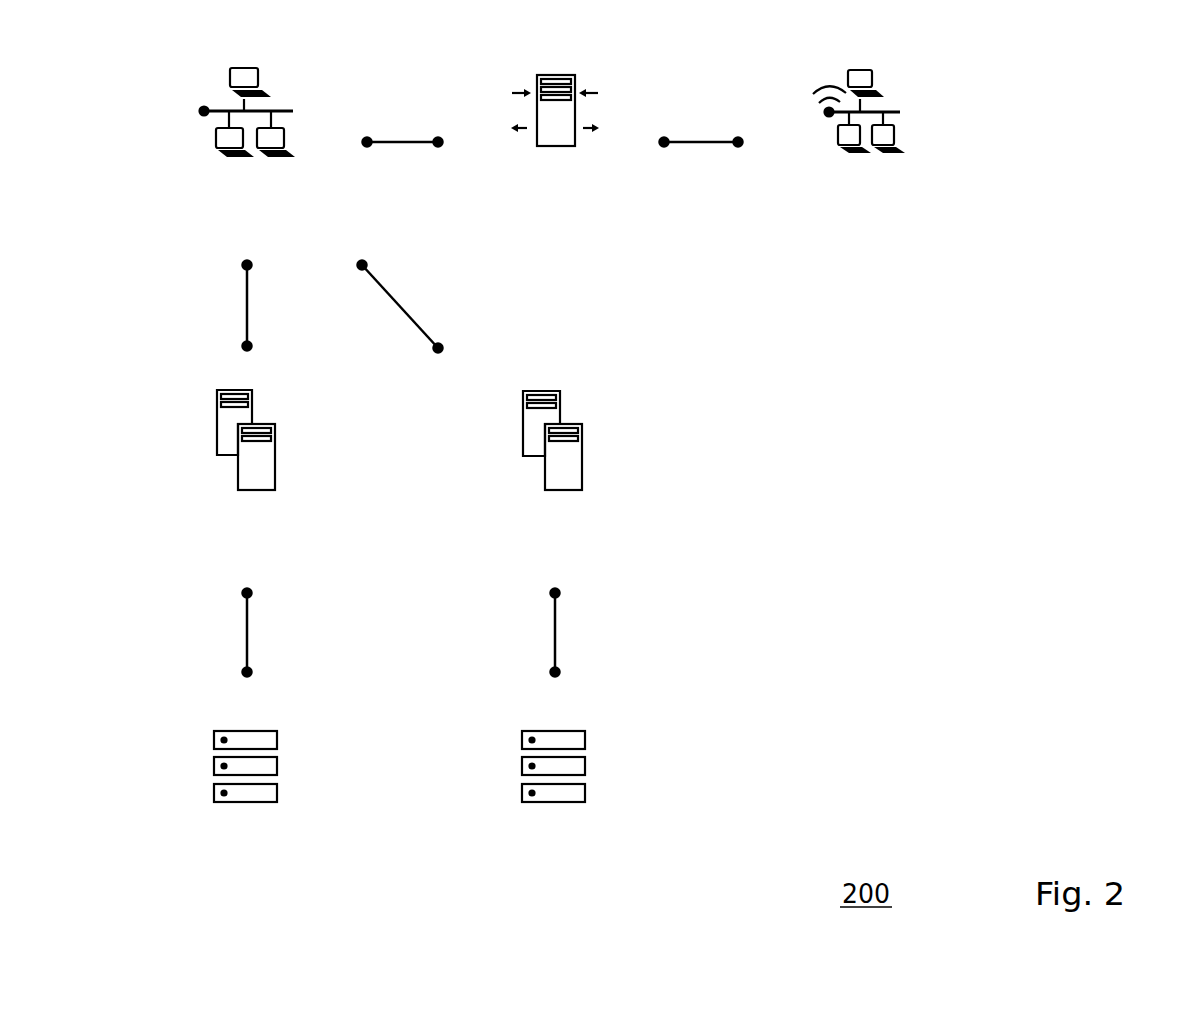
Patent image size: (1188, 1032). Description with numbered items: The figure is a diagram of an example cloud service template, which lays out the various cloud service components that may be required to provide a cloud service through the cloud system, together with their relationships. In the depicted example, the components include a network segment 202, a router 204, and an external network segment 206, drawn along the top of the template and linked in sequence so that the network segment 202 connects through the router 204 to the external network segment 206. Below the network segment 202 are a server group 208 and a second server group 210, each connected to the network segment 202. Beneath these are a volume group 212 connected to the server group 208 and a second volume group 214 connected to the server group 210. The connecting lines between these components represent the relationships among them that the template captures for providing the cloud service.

The network segment 202 is at (197, 137).
The router 204 is at (593, 78).
The external network segment 206 is at (920, 116).
The server group 208 is at (213, 452).
The server group 2 210 is at (595, 450).
The volume group 212 is at (205, 768).
The volume group 2 214 is at (590, 775).